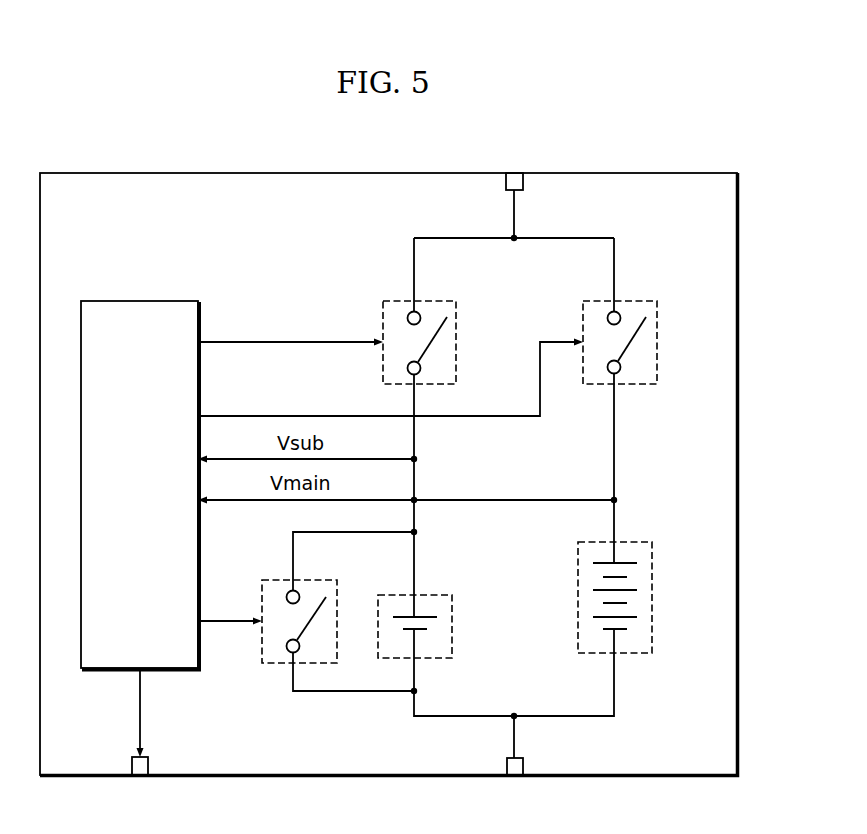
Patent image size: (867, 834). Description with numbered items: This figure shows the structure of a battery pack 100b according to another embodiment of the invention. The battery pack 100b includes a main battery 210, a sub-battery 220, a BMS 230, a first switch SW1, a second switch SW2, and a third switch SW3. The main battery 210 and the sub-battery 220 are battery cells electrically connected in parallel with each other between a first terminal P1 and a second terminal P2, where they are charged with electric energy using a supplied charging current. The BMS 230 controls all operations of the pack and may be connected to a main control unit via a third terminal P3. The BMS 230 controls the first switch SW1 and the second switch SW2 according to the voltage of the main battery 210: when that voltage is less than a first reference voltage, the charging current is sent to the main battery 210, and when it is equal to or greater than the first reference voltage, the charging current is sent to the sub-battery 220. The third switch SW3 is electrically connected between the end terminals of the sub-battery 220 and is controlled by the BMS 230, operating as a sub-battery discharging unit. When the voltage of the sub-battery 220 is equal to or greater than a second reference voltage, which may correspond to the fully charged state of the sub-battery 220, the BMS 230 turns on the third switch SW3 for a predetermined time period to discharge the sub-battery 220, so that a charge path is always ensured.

The battery pack 100b is at (630, 173).
The BMS 230 is at (140, 300).
The sub-battery 220 is at (438, 593).
The main battery 210 is at (652, 563).
The first switch SW1 is at (633, 302).
The second switch SW2 is at (438, 299).
The third switch SW3 is at (313, 578).
The first terminal P1 is at (517, 167).
The second terminal P2 is at (517, 781).
The third terminal P3 is at (140, 780).